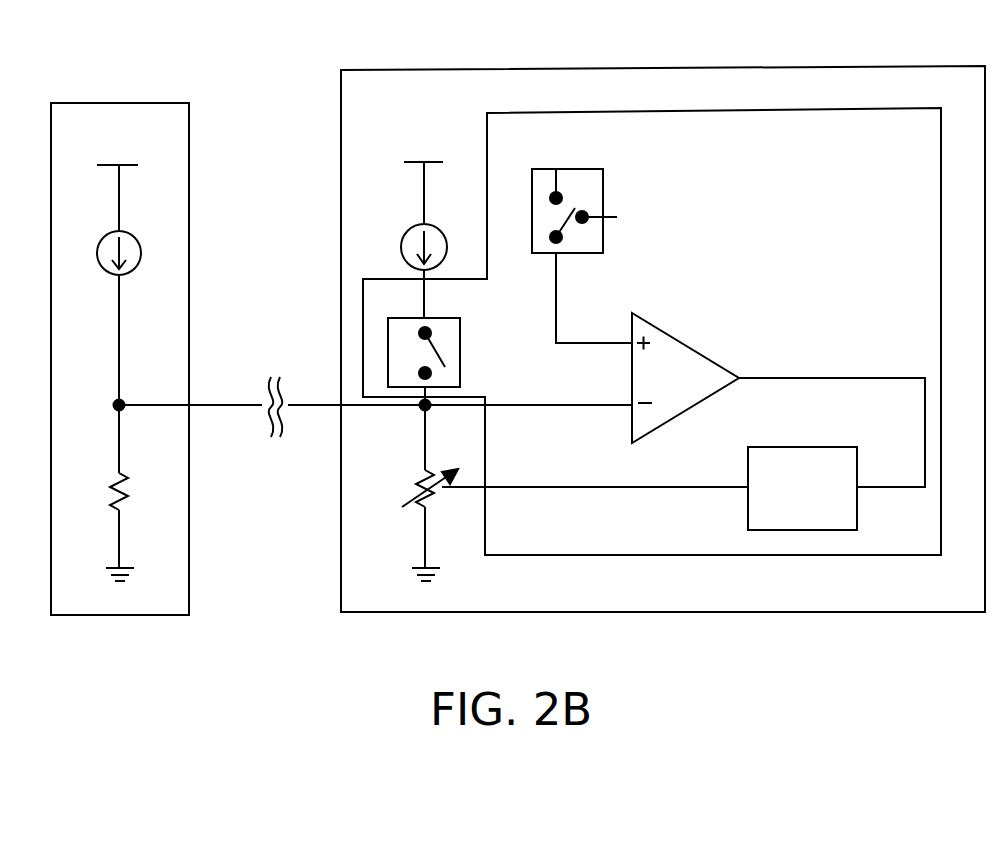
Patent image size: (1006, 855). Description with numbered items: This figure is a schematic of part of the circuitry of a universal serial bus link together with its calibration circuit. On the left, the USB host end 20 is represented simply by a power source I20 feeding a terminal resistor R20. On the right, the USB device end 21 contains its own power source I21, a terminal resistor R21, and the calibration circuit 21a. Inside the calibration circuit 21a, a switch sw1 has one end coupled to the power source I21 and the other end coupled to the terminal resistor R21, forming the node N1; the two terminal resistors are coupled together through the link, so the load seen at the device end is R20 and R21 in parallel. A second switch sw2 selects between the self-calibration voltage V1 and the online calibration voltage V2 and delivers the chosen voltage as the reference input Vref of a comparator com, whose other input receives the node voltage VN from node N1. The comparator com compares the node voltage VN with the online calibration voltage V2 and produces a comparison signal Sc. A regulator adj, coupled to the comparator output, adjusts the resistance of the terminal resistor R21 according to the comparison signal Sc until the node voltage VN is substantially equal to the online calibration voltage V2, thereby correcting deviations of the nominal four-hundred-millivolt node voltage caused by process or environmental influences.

The USB host end 20 is at (166, 103).
The USB device end 21 is at (762, 67).
The calibration circuit 21a is at (899, 109).
The power source of the USB host end I20 is at (140, 243).
The power source of the USB device end I21 is at (446, 238).
The terminal resistor R20 is at (142, 493).
The terminal resistor R21 is at (414, 493).
The switch sw1 is at (460, 326).
The switch sw2 is at (603, 180).
The node N1 is at (409, 419).
The self-calibration voltage V1 is at (615, 220).
The online calibration voltage V2 is at (556, 168).
The reference voltage input Vref is at (594, 298).
The node voltage VN is at (595, 388).
The comparator com is at (685, 342).
The comparison signal Sc is at (832, 418).
The regulator adj is at (803, 447).